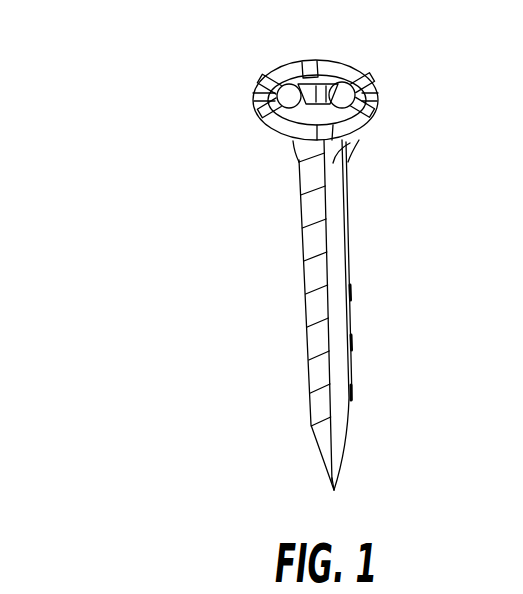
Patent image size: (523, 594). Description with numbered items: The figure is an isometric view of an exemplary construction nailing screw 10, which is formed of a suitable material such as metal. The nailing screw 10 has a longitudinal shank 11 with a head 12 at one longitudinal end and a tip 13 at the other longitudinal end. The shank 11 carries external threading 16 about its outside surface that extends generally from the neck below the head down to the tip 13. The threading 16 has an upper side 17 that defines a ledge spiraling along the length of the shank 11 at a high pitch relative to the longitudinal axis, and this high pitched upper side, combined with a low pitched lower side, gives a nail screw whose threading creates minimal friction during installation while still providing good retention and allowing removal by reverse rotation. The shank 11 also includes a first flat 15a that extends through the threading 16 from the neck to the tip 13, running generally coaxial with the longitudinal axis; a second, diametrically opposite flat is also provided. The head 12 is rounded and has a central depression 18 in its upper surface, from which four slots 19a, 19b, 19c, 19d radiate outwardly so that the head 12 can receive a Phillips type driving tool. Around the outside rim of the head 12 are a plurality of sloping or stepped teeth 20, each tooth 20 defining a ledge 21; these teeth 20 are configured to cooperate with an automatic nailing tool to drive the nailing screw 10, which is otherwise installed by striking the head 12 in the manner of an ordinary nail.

The construction nailing screw 10 is at (99, 114).
The shank 11 is at (358, 335).
The head 12 is at (388, 109).
The tip 13 is at (333, 490).
The first flat 15a is at (336, 247).
The external threading 16 is at (348, 290).
The upper side 17 is at (318, 250).
The central depression 18 is at (330, 78).
The slot 19a is at (288, 76).
The slot 19b is at (368, 78).
The slot 19c is at (360, 130).
The slot 19d is at (301, 142).
The teeth 20 is at (303, 68).
The ledge 21 is at (262, 105).